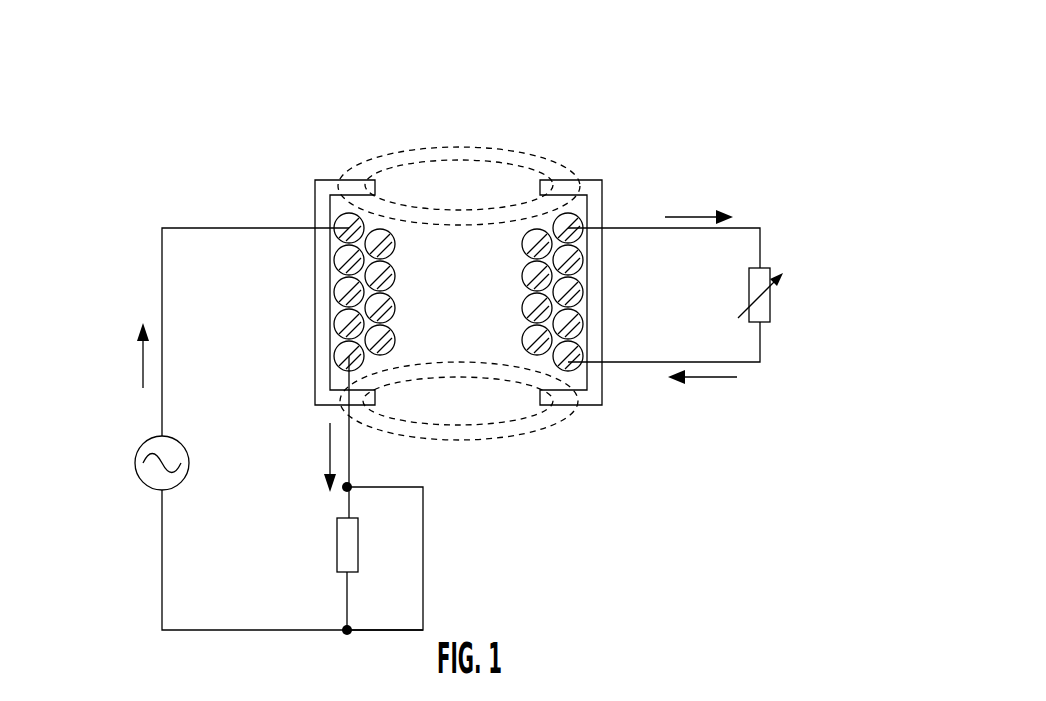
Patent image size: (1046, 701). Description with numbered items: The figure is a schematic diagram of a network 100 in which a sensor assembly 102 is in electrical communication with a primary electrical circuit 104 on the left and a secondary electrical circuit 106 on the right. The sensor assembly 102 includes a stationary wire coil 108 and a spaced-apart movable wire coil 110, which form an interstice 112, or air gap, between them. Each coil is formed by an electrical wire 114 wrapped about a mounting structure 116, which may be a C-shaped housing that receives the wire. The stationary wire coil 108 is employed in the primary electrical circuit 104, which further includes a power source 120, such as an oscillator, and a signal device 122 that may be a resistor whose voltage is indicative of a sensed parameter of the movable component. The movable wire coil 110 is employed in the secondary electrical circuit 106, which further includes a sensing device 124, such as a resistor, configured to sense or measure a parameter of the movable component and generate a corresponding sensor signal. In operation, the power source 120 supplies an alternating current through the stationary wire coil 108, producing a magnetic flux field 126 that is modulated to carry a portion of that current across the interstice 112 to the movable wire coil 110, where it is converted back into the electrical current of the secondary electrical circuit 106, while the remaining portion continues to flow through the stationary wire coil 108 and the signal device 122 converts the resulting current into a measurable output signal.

The network 100 is at (86, 61).
The sensor assembly 102 is at (598, 103).
The primary electrical circuit 104 is at (128, 204).
The secondary electrical circuit 106 is at (786, 175).
The stationary wire coil 108 is at (300, 204).
The movable wire coil 110 is at (609, 190).
The interstice 112 is at (535, 143).
The electrical wire 114 is at (392, 268).
The mounting structure 116 is at (315, 272).
The power source 120 is at (142, 482).
The signal device 122 is at (338, 535).
The sensing device 124 is at (772, 302).
The magnetic flux field 126 is at (573, 163).